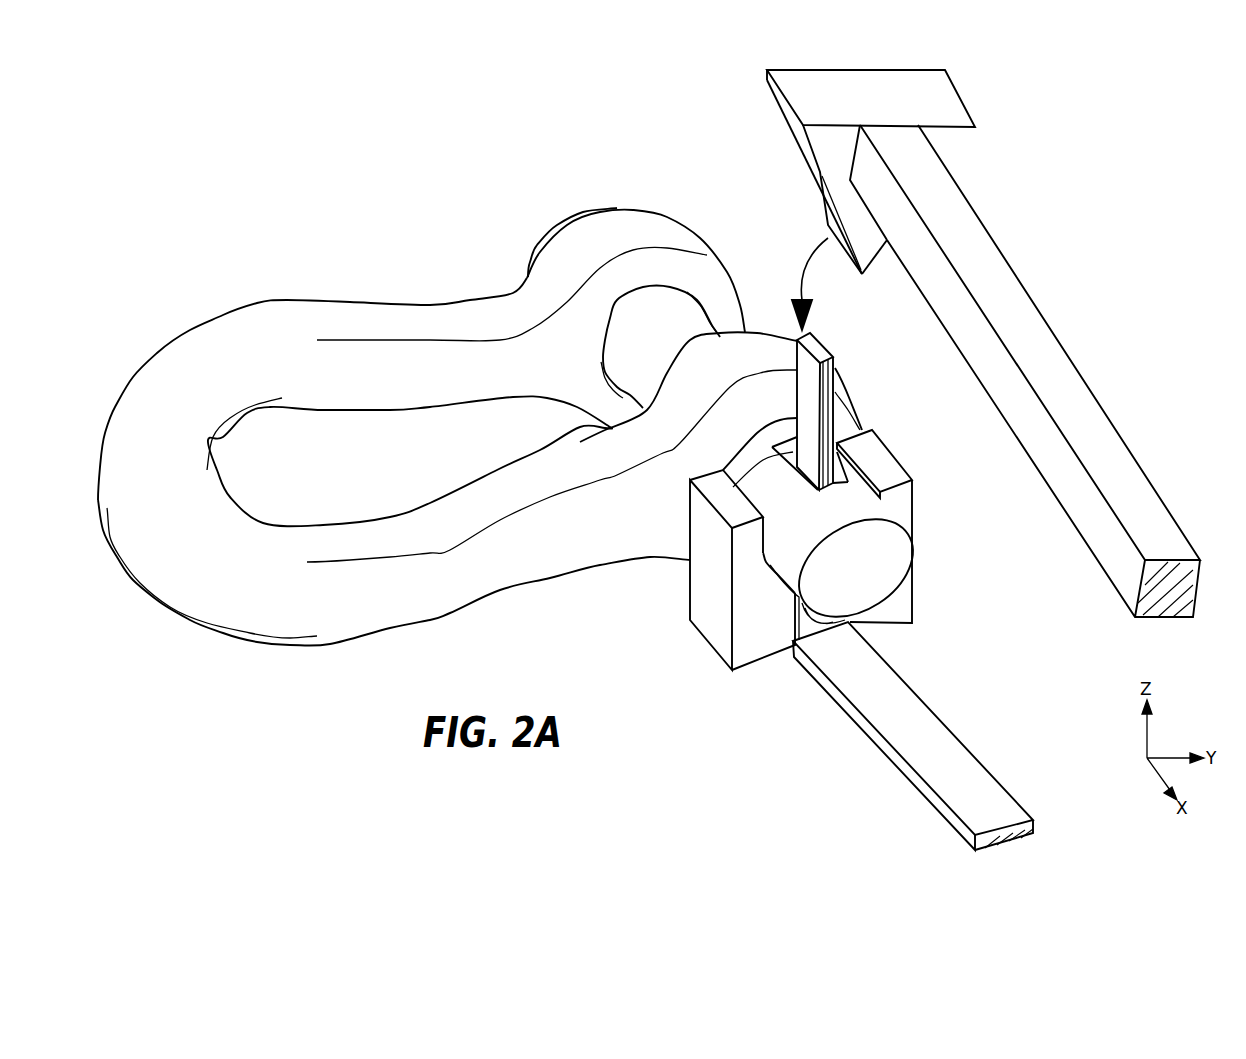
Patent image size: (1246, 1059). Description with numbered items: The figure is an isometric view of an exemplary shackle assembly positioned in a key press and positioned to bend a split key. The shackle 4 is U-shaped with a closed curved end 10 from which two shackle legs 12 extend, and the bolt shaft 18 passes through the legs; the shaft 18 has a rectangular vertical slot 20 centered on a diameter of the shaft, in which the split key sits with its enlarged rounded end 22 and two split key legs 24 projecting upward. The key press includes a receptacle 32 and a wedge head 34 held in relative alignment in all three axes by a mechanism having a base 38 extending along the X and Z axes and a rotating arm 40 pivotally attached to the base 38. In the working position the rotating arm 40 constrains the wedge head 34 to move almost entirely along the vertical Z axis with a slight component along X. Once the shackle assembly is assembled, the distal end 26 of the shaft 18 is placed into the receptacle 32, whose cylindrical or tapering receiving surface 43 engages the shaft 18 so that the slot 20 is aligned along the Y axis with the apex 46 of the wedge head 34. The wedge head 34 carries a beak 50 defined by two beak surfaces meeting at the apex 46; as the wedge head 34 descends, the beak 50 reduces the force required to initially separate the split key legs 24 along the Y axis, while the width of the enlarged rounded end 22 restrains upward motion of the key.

The shackle 4 is at (480, 419).
The closed curved end 10 is at (158, 572).
The shackle legs 12 is at (665, 232).
The shaft 18 is at (862, 608).
The vertical slot 20 is at (718, 586).
The enlarged rounded end 22 is at (800, 643).
The split key legs 24 is at (837, 364).
The distal end 26 is at (865, 507).
The receptacle 32 is at (862, 545).
The wedge head 34 is at (953, 147).
The base 38 is at (935, 728).
The rotating arm 40 is at (983, 343).
The receiving surface 43 is at (773, 580).
The apex 46 is at (863, 280).
The beak 50 is at (837, 196).